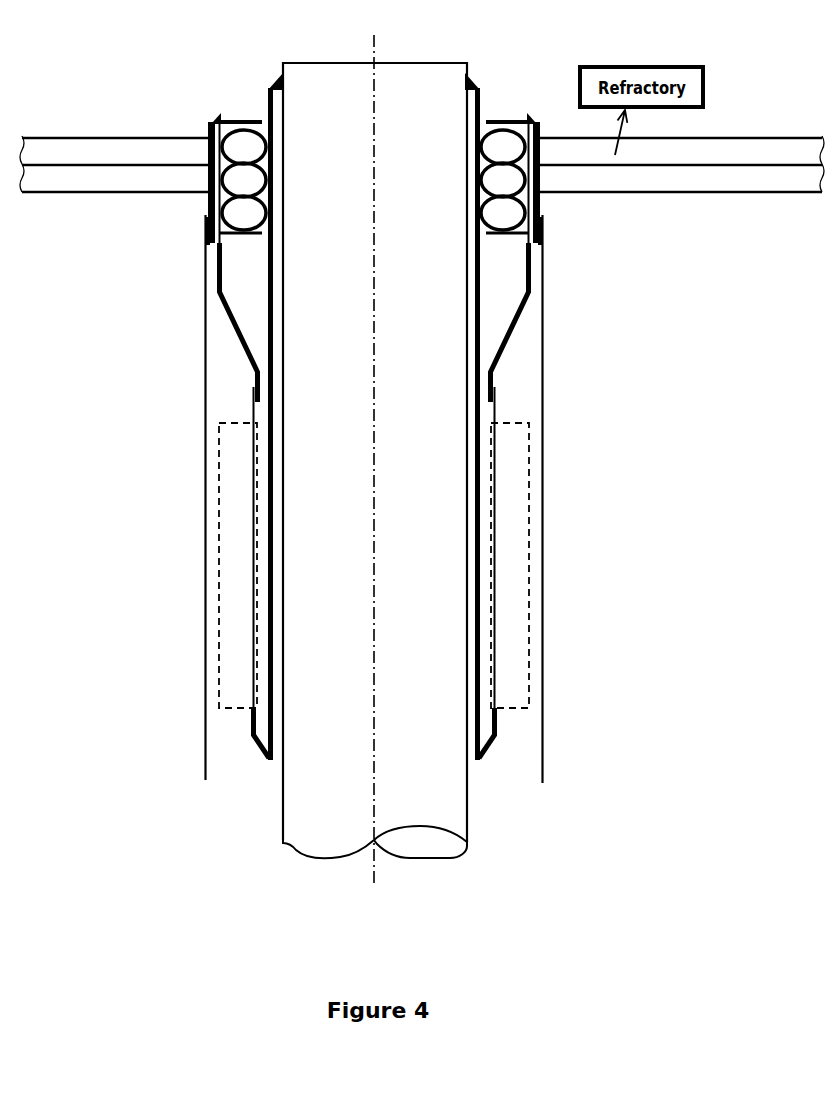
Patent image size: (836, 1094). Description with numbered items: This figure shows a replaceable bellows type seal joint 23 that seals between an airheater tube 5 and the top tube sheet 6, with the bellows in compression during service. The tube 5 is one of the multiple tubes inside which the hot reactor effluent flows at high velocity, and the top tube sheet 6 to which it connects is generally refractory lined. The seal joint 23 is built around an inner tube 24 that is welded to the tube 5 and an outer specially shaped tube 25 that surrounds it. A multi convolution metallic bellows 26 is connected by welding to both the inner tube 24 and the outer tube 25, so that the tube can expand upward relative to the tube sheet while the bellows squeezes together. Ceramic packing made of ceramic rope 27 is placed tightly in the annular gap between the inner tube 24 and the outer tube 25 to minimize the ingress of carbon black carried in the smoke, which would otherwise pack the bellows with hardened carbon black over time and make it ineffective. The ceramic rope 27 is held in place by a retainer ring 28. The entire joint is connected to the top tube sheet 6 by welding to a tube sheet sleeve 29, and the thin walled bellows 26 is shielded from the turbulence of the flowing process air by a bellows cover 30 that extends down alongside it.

The tube 5 is at (375, 763).
The top tube sheet 6 is at (115, 172).
The replaceable bellows type seal joint 23 is at (358, 488).
The inner tube 24 is at (482, 707).
The outer specially shaped tube 25 is at (502, 353).
The multi convolution metallic bellows 26 is at (508, 615).
The ceramic packing 27 is at (500, 218).
The retainer ring 28 is at (243, 121).
The tube sheet sleeve 29 is at (540, 213).
The bellows cover 30 is at (205, 537).